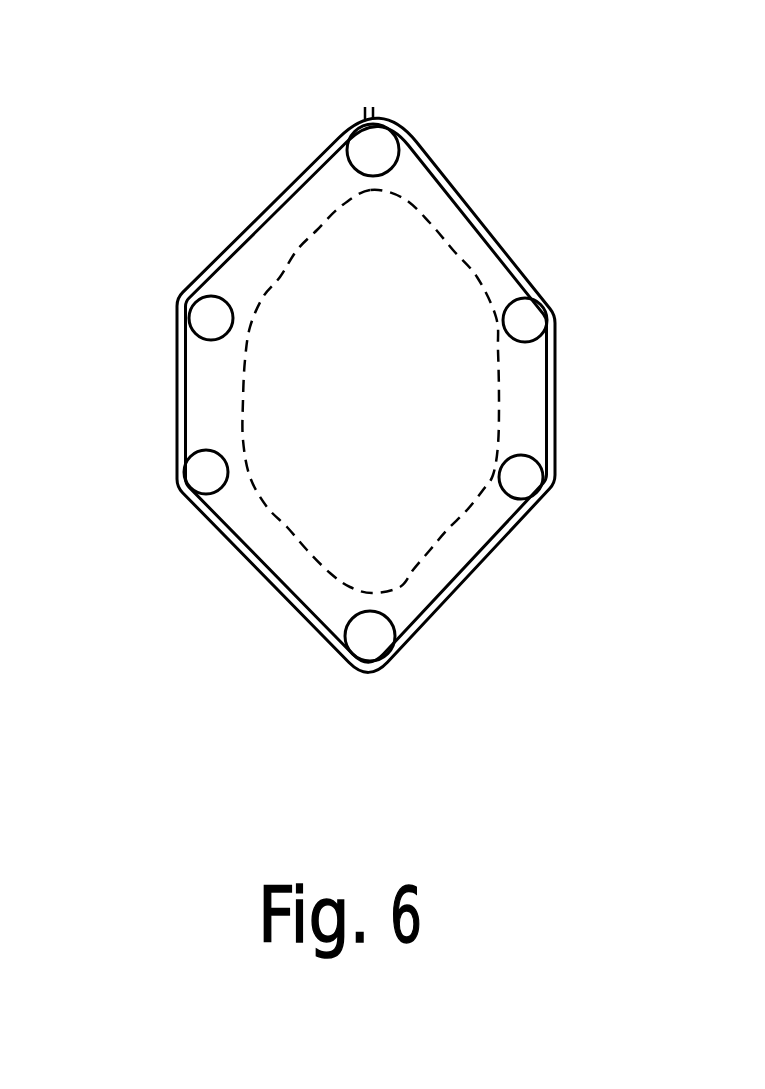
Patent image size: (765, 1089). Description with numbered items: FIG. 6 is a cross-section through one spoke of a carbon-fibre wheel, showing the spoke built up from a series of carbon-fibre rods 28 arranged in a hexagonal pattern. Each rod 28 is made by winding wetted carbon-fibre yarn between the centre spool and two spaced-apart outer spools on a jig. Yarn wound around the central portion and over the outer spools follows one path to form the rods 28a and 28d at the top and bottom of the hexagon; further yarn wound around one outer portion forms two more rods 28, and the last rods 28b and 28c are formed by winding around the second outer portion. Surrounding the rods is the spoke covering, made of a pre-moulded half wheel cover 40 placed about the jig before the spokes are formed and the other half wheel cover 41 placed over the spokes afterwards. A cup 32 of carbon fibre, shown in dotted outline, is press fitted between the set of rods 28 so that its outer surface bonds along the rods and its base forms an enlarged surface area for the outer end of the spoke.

The carbon-fibre rods 28 is at (537, 483).
The rod 28a is at (352, 147).
The rod 28b is at (205, 308).
The rod 28c is at (203, 478).
The rod 28d is at (367, 643).
The cup 32 is at (245, 380).
The half wheel cover 40 is at (178, 405).
The other half wheel cover 41 is at (465, 200).